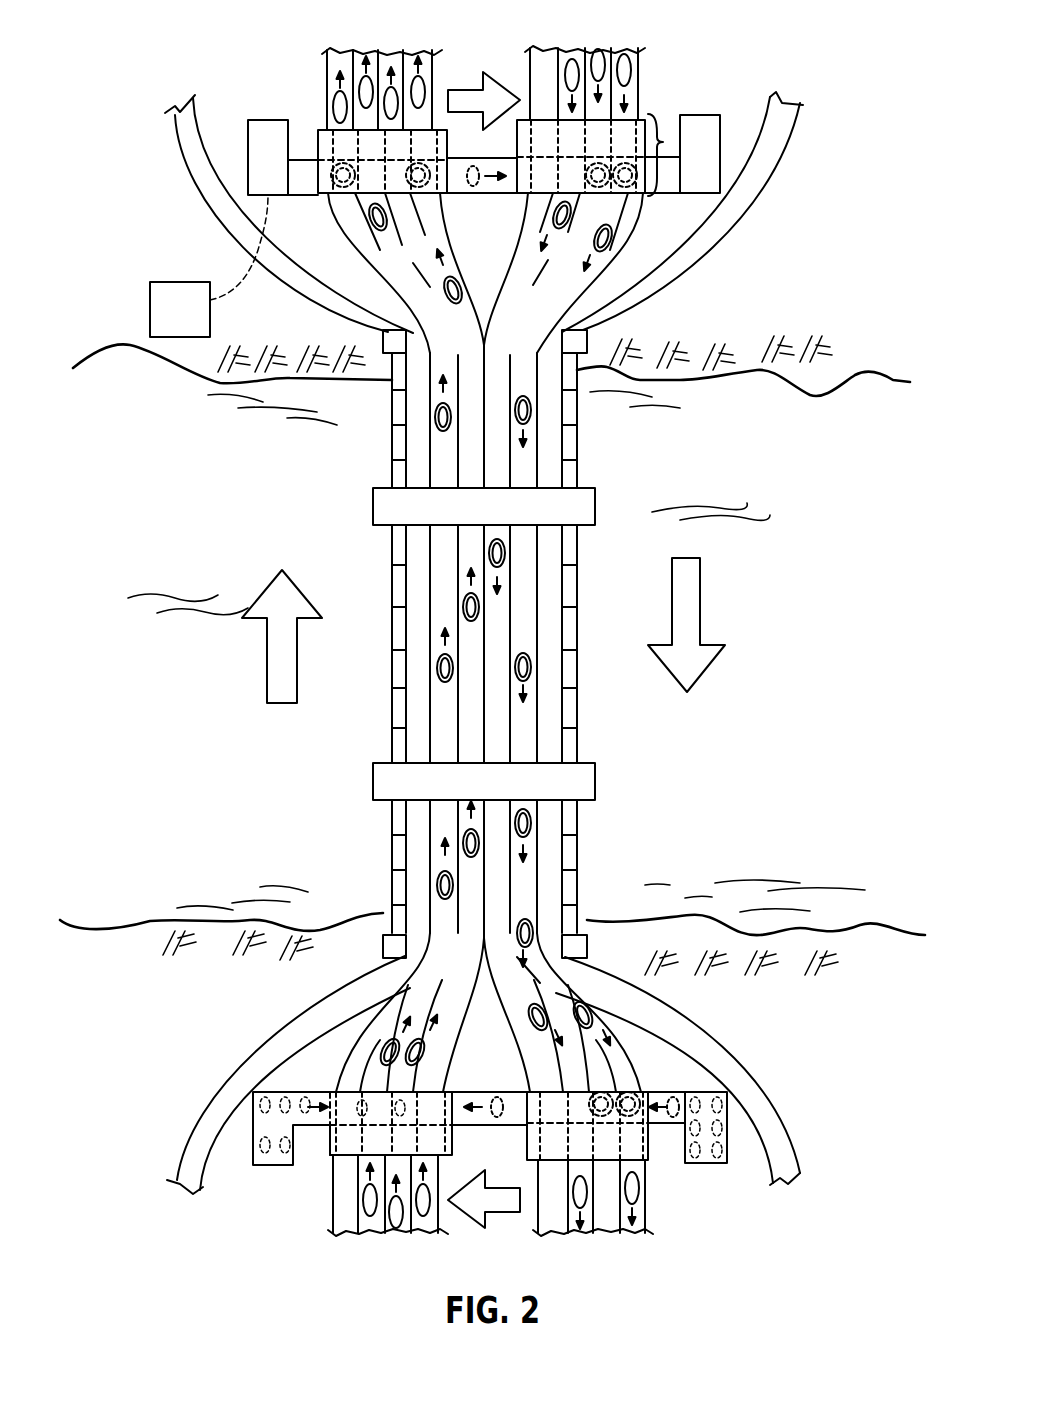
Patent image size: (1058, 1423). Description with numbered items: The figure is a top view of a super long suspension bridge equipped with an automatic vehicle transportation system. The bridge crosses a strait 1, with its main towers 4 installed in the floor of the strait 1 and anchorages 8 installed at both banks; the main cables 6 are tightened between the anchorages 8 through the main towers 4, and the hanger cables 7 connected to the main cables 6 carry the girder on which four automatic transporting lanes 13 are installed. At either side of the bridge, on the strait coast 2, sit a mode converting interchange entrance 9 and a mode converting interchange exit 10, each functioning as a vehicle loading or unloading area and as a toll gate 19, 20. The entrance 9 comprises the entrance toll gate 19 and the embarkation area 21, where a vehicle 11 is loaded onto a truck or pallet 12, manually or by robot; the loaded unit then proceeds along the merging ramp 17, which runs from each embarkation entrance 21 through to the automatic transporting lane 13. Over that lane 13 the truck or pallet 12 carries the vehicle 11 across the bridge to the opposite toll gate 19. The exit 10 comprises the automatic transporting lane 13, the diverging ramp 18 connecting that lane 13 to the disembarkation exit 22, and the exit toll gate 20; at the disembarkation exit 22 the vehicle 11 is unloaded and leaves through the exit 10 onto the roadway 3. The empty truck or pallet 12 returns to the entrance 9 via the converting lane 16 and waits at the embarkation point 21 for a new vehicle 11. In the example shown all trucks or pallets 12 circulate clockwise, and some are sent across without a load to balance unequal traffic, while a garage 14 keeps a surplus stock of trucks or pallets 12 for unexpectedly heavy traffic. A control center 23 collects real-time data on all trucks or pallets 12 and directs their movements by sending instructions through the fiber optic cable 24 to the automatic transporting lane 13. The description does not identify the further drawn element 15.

The strait 1 is at (470, 623).
The strait coast 2 is at (818, 383).
The roadway 3 is at (483, 624).
The main towers 4 is at (597, 500).
The main cables 6 is at (578, 592).
The hanger cables 7 is at (514, 643).
The anchorages 8 is at (583, 342).
The mode converting interchange entrance 9 is at (664, 155).
The mode converting interchange exit 10 is at (351, 162).
The vehicle 11 is at (340, 90).
The truck or pallet 12 is at (440, 420).
The automatic transporting lane 13 is at (528, 718).
The garage 14 is at (253, 153).
The branch pipe 15 is at (193, 165).
The converting lane for the truck or pallet 16 is at (503, 193).
The merging ramp 17 is at (545, 285).
The diverging ramp 18 is at (407, 250).
The toll gate (entrance) 19 is at (466, 609).
The toll gate (exit) 20 is at (420, 55).
The embarkation area 21 is at (637, 193).
The disembarkation exit 22 is at (328, 195).
The control center 23 is at (180, 309).
The fiber optic cable 24 is at (244, 297).